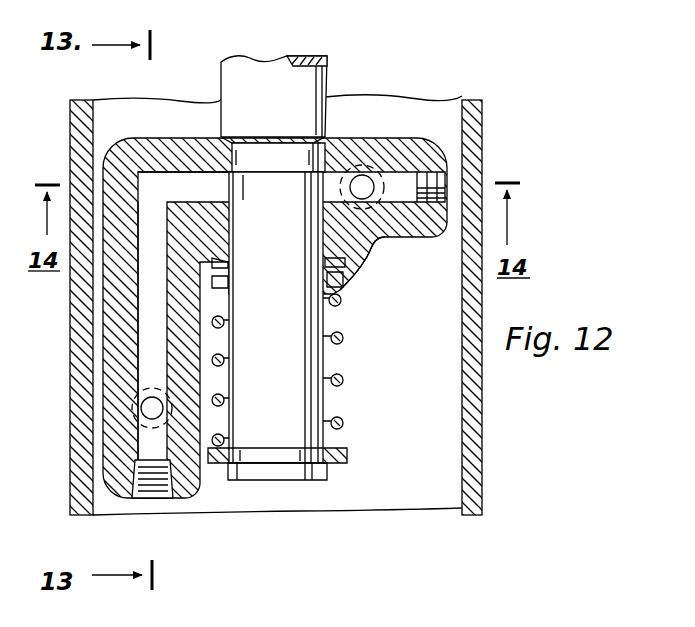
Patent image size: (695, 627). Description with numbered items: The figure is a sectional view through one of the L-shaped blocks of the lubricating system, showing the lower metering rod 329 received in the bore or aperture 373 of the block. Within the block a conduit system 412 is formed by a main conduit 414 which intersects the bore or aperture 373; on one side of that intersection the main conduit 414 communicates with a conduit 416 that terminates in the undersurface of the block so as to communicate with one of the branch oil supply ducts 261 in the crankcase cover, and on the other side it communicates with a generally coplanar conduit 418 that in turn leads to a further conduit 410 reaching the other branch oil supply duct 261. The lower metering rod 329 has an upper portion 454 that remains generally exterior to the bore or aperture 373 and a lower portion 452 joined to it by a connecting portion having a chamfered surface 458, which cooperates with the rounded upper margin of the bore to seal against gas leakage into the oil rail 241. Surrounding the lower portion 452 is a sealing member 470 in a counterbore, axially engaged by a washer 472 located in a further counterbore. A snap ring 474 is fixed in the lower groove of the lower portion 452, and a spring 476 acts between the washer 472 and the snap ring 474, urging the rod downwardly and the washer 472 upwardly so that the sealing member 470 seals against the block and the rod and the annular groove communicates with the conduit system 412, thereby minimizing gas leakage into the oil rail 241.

The lower metering rod 329 is at (317, 235).
The upper portion 454 is at (308, 75).
The chamfered surface 458 is at (277, 138).
The conduit 416 is at (362, 150).
The branch oil supply ducts 261 is at (366, 183).
The bore or aperture 373 is at (366, 247).
The sealing member 470 is at (335, 266).
The washer 472 is at (338, 290).
The spring 476 is at (345, 340).
The snap ring 474 is at (348, 455).
The lower portion 452 is at (318, 478).
The oil rail 241 is at (436, 492).
The conduit system 412 is at (119, 131).
The main conduit 414 is at (192, 182).
The conduit 418 is at (140, 322).
The passage 410 is at (122, 430).